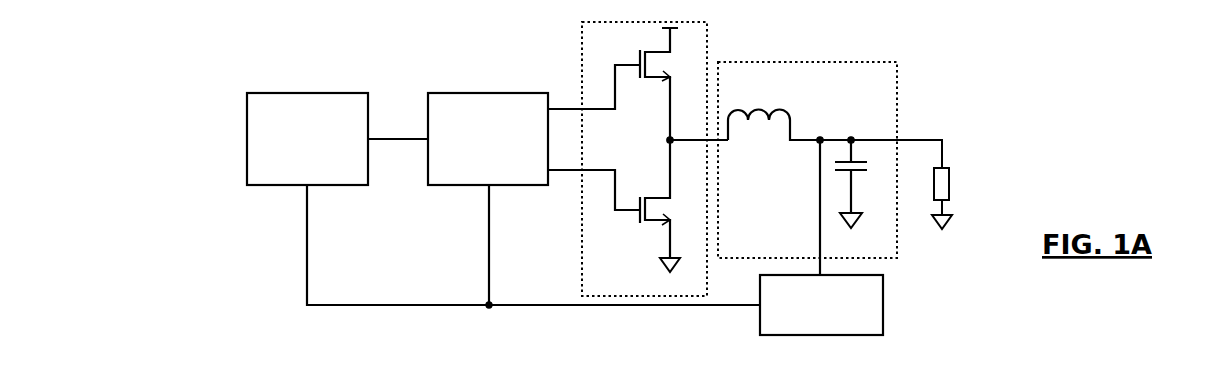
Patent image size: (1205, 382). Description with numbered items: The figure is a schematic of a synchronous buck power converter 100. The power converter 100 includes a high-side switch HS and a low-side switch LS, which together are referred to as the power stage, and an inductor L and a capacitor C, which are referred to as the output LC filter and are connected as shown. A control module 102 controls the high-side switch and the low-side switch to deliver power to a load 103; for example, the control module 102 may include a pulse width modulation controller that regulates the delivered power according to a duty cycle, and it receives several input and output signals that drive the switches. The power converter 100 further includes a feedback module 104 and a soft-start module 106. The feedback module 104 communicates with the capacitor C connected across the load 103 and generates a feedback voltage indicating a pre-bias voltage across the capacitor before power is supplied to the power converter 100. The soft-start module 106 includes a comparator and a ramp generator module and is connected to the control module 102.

The power converter 100 is at (909, 81).
The control module 102 is at (488, 93).
The load 103 is at (949, 182).
The feedback module 104 is at (883, 302).
The soft-start module 106 is at (308, 93).